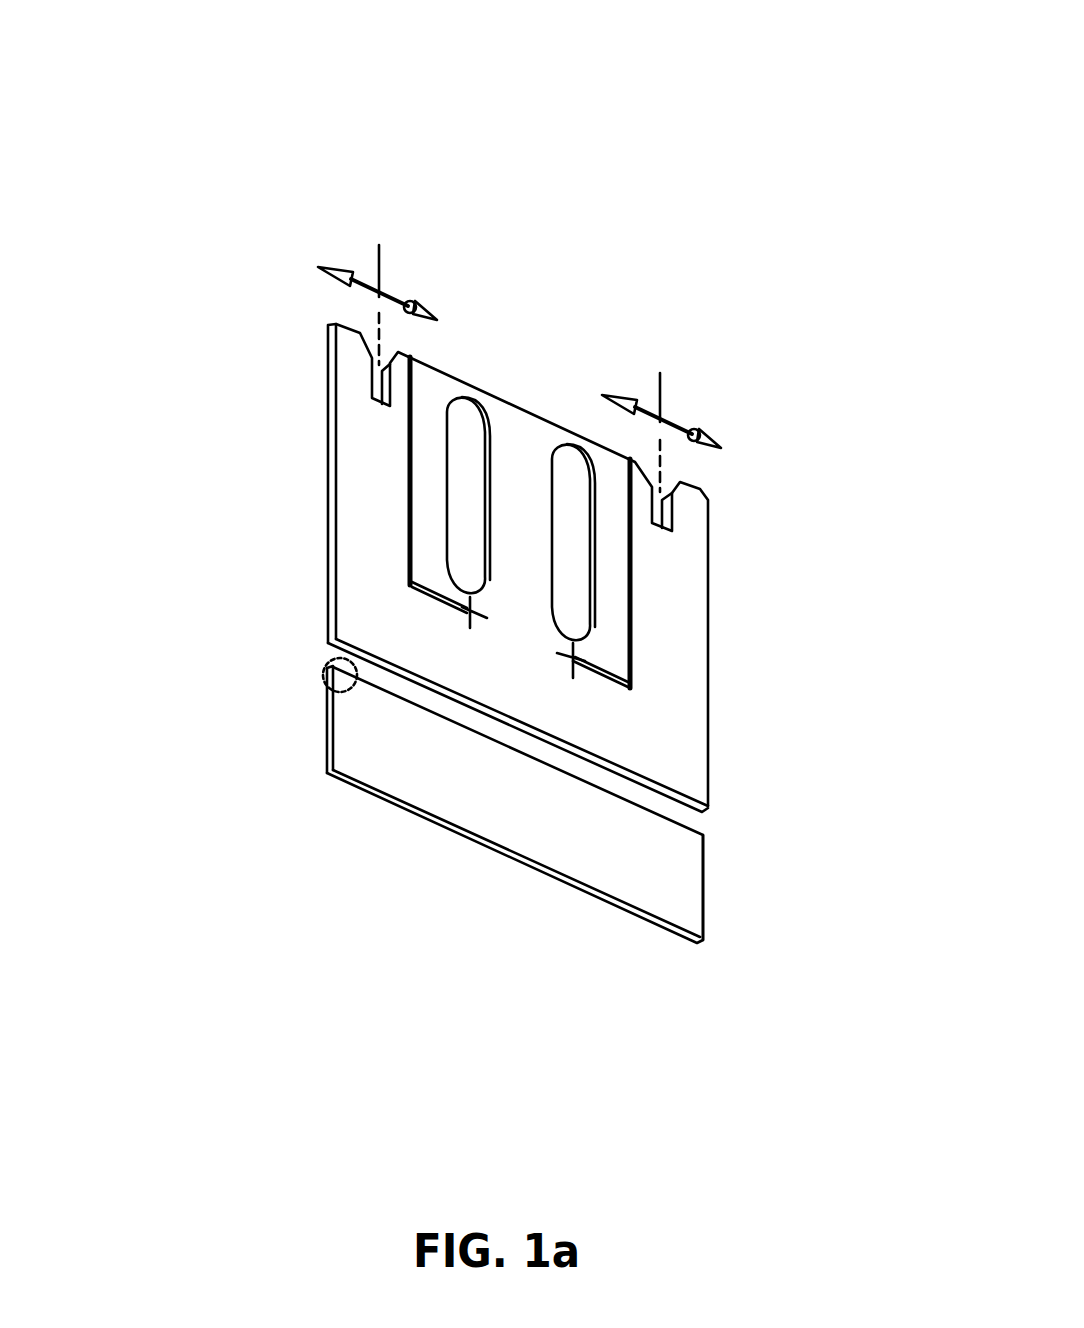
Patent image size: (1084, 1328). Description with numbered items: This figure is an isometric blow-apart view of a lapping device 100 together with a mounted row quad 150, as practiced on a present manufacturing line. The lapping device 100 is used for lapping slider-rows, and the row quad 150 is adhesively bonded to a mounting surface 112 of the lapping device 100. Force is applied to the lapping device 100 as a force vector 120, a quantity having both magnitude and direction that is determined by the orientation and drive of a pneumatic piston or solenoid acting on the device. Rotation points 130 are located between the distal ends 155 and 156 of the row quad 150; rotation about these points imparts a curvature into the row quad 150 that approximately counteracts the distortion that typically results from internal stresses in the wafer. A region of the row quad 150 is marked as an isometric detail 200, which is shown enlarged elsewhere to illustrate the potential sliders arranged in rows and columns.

The lapping device 100 is at (362, 185).
The mounting surface 112 is at (690, 806).
The force vector 120 is at (380, 293).
The rotation points 130 is at (470, 610).
The row quad 150 is at (657, 865).
The distal end 155 is at (327, 748).
The distal end 156 is at (700, 907).
The isometric detail 200 is at (323, 669).